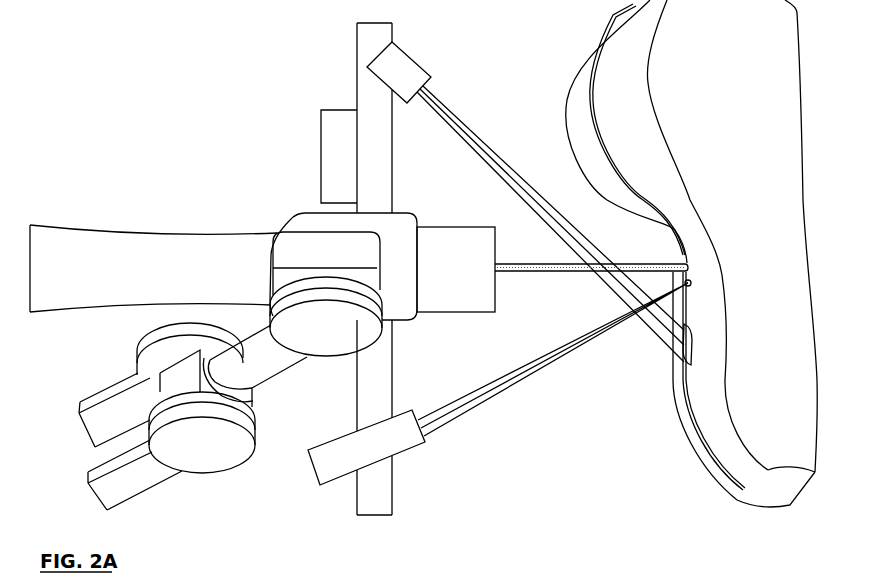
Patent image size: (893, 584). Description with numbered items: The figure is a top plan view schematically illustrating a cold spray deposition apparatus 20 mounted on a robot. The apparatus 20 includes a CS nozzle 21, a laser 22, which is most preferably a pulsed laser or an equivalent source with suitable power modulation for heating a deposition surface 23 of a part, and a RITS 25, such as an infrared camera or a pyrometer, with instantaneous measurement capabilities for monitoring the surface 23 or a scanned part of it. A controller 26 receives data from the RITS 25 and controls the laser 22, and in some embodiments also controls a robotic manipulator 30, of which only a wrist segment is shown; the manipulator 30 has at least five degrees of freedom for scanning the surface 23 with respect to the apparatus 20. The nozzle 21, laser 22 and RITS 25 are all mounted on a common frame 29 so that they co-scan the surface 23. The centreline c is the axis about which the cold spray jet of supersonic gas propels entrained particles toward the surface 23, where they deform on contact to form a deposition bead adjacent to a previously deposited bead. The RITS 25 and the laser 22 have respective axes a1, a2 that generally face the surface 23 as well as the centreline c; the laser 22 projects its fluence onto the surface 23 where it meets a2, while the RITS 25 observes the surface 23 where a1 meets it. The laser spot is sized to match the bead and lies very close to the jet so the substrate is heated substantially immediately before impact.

The CS deposition apparatus 20 is at (317, 68).
The CS nozzle 21 is at (422, 283).
The laser 22 is at (321, 468).
The deposition surface 23 is at (694, 405).
The RITS 25 is at (389, 82).
The controller 26 is at (327, 172).
The common frame 29 is at (364, 395).
The robotic manipulator 30 is at (312, 341).
The axis of the RITS a1 is at (519, 192).
The axis of the laser a2 is at (455, 404).
The centreline c is at (549, 254).